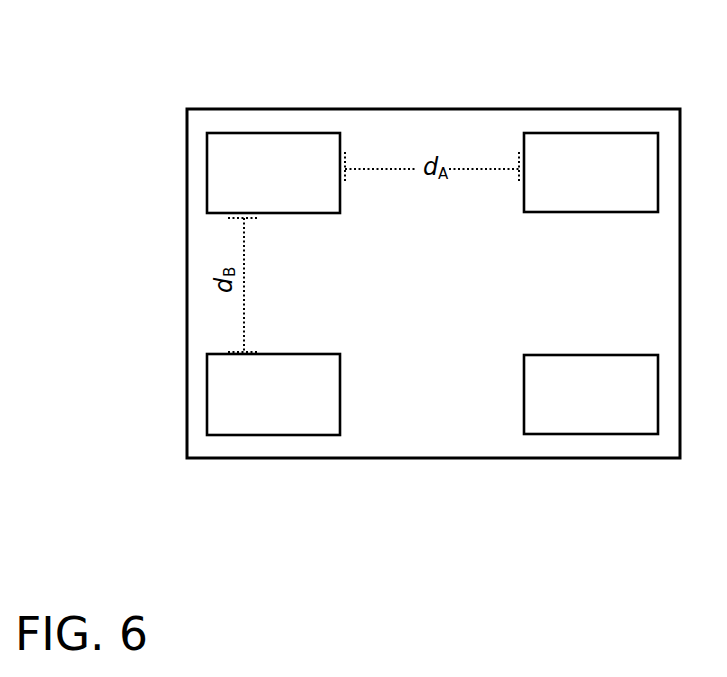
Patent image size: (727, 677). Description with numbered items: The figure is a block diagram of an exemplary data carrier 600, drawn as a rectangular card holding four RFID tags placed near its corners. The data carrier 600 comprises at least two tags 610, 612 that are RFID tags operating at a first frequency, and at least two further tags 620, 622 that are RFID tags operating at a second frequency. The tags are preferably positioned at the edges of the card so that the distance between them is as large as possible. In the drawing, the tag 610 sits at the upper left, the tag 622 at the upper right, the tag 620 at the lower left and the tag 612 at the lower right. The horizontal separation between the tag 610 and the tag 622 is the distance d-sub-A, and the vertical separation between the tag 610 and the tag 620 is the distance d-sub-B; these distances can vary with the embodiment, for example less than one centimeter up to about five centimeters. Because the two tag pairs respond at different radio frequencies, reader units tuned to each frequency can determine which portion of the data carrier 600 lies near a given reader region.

The data carrier 600 is at (434, 108).
The tag 610 is at (273, 173).
The tag 622 is at (591, 172).
The tag 620 is at (273, 394).
The tag 612 is at (591, 394).